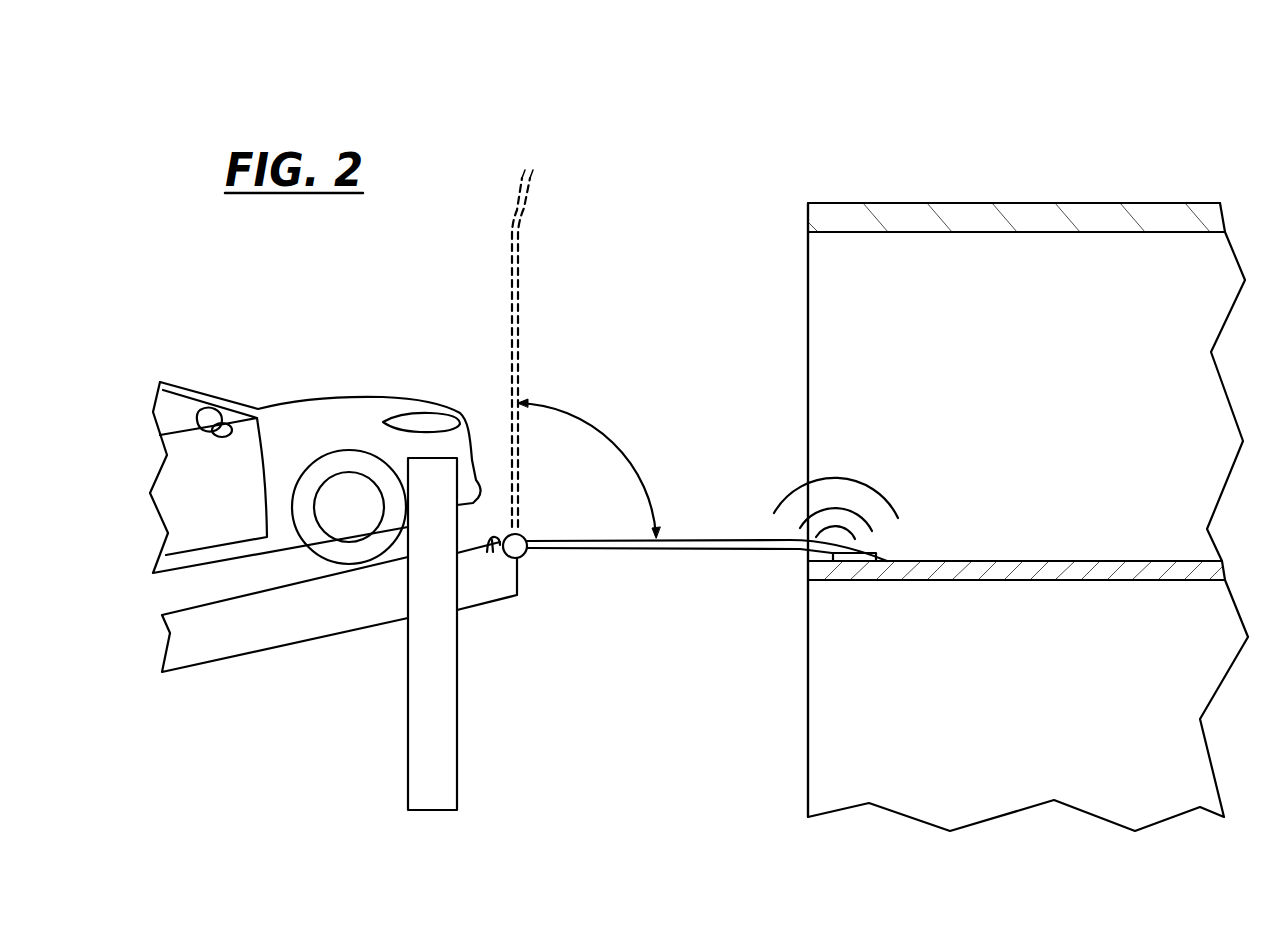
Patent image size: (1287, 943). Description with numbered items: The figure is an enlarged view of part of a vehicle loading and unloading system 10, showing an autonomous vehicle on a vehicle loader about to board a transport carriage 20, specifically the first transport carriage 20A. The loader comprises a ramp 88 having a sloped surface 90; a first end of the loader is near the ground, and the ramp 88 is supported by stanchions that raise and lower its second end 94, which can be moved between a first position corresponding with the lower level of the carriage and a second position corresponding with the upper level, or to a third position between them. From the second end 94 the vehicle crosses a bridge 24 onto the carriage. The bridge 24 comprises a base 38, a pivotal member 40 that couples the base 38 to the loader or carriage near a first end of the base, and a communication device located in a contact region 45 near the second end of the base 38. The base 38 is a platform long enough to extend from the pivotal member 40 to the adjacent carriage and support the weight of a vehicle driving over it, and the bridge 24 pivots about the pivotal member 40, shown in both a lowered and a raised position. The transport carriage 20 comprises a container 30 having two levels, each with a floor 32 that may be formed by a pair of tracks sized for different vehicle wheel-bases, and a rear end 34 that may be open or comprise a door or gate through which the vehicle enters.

The vehicle loading and unloading system 10 is at (990, 436).
The transport carriage 20 is at (990, 468).
The first transport carriage 20A is at (1133, 203).
The container 30 is at (942, 203).
The floor 32 is at (1022, 561).
The rear end 34 is at (808, 203).
The bridge 24 is at (699, 389).
The base 38 is at (695, 540).
The pivotal member 40 is at (528, 560).
The contact region 45 is at (858, 565).
The ramp 88 is at (471, 545).
The sloped surface 90 is at (191, 610).
The second end 94 is at (492, 540).